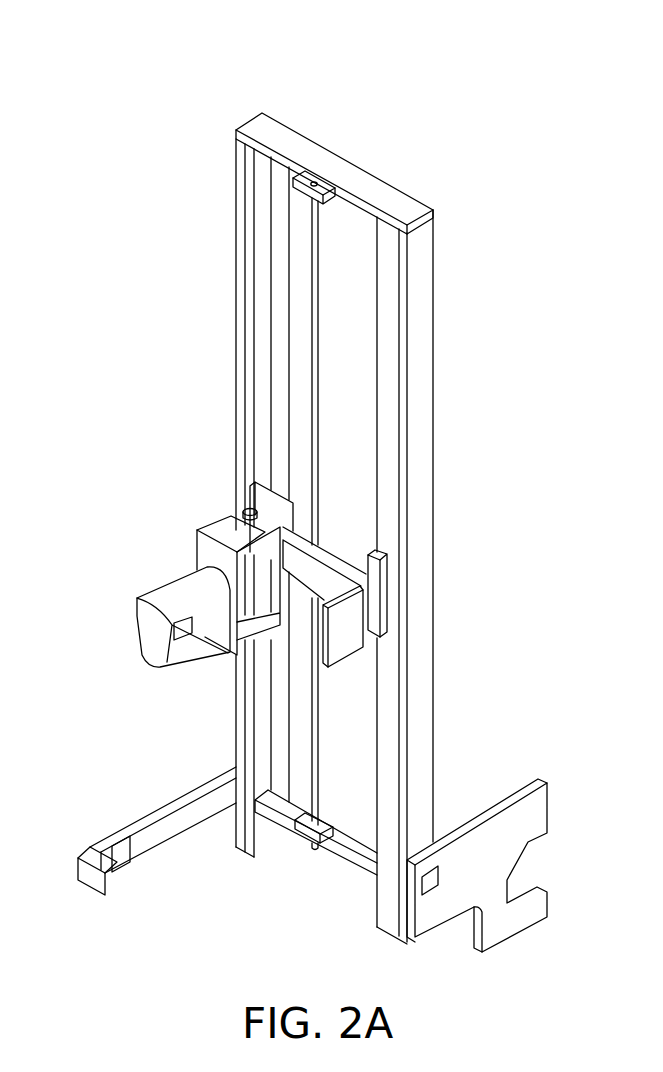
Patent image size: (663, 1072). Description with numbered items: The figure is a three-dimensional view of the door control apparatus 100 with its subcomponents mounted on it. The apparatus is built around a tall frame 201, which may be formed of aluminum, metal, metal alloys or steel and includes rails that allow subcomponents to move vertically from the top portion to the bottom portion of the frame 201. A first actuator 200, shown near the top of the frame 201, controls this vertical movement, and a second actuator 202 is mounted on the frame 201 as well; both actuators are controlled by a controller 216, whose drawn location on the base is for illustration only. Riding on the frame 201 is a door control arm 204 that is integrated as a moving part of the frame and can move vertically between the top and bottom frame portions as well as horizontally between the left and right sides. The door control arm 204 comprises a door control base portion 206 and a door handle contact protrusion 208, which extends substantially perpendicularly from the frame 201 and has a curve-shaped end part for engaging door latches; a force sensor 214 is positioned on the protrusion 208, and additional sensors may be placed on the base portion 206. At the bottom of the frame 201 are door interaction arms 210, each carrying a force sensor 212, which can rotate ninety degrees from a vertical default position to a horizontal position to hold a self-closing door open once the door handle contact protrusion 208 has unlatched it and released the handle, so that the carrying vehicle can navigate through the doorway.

The door control apparatus 100 is at (552, 108).
The first actuator 200 is at (318, 183).
The frame 201 is at (432, 278).
The second actuator 202 is at (377, 586).
The door control arm 204 is at (219, 474).
The door control base portion 206 is at (317, 588).
The door handle contact protrusion 208 is at (172, 590).
The door interaction arms 210 is at (88, 882).
The force sensor 212 is at (122, 862).
The force sensor 214 is at (184, 638).
The controller 216 is at (428, 880).